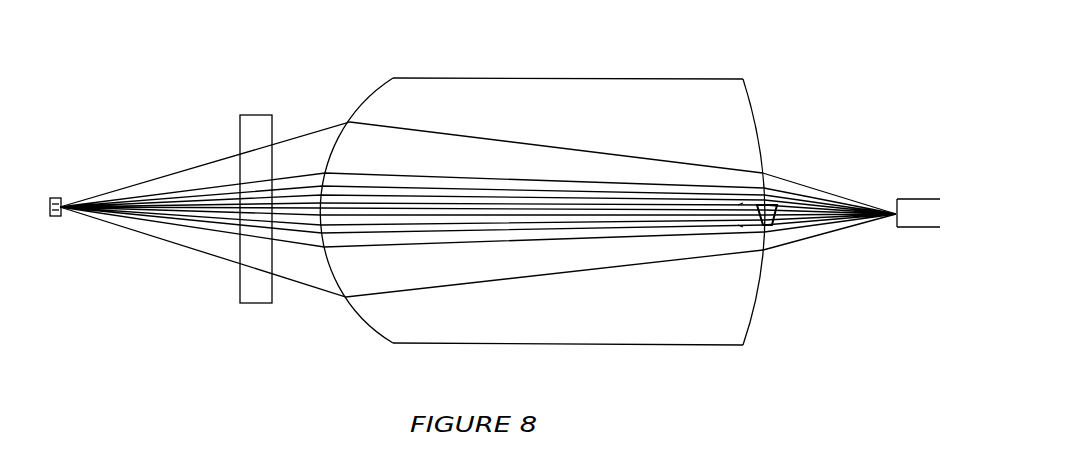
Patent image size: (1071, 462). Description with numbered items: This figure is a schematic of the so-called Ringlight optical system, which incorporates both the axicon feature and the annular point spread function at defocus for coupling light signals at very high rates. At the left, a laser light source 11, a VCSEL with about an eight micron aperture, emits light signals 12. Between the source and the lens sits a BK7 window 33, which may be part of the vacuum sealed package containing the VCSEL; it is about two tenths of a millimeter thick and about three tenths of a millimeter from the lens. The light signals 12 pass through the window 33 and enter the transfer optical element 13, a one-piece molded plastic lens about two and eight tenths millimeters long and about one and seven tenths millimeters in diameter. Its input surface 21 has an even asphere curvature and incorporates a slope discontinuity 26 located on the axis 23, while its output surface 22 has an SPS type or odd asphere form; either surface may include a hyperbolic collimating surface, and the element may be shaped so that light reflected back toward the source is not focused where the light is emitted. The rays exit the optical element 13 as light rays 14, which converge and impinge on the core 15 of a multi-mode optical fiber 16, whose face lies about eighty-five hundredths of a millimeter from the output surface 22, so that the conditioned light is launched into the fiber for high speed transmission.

The laser light source 11 is at (56, 197).
The light signals 12 is at (168, 176).
The window 33 is at (245, 114).
The transfer optical element 13 is at (566, 201).
The surface 21 is at (368, 314).
The surface 22 is at (765, 157).
The axis 23 is at (510, 214).
The light rays 14 is at (810, 186).
The slope discontinuity 26 is at (767, 226).
The core 15 is at (895, 228).
The optical fiber 16 is at (920, 198).